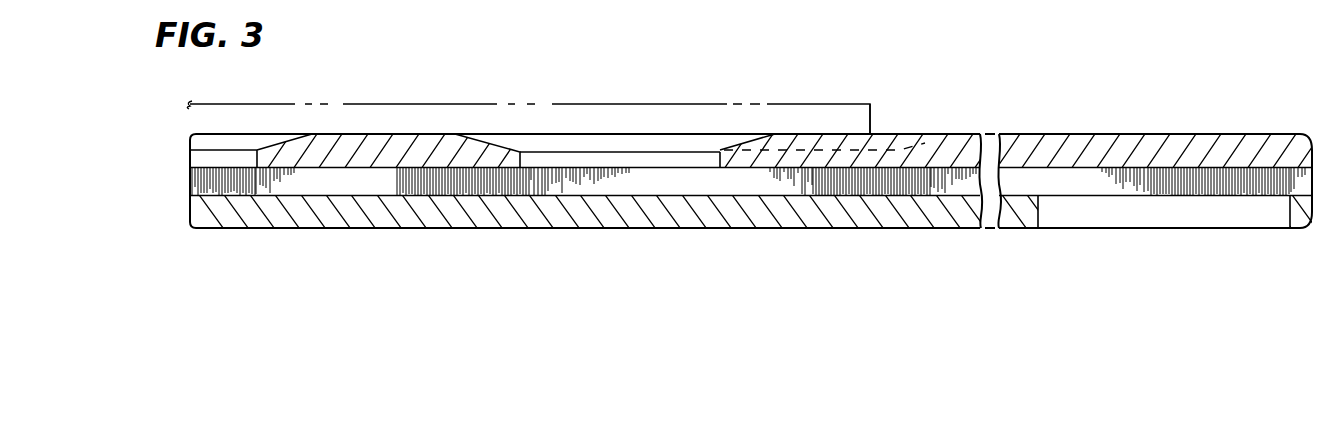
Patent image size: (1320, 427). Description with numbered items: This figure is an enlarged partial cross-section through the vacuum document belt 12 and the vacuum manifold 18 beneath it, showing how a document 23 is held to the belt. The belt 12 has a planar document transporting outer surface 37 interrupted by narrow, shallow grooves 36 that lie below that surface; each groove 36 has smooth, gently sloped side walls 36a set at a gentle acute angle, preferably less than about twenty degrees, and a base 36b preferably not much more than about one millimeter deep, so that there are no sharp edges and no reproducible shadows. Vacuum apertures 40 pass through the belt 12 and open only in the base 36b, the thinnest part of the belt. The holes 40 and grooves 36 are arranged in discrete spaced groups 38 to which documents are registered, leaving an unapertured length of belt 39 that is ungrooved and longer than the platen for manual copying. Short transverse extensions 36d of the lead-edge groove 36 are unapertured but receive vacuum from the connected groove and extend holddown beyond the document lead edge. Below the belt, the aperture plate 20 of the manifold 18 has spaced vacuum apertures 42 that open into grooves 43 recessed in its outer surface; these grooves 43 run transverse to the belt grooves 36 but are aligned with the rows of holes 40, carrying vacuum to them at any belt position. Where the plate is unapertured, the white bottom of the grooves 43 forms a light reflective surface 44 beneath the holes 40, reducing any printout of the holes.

The vacuum document belt 12 is at (1018, 134).
The vacuum manifold 18 is at (170, 200).
The aperture plate 20 is at (213, 217).
The document 23 is at (817, 104).
The shallow grooves 36 is at (596, 122).
The side walls 36a is at (504, 141).
The base 36b is at (582, 141).
The transverse extensions 36d is at (900, 134).
The document transporting outer surface 37 is at (412, 134).
The spaced groups 38 is at (564, 86).
The unapertured length of belt 39 is at (1152, 108).
The vacuum apertures 40 is at (689, 156).
The vacuum apertures 42 is at (1167, 213).
The grooves 43 is at (192, 182).
The light reflective bottom manifold surface 44 is at (368, 210).